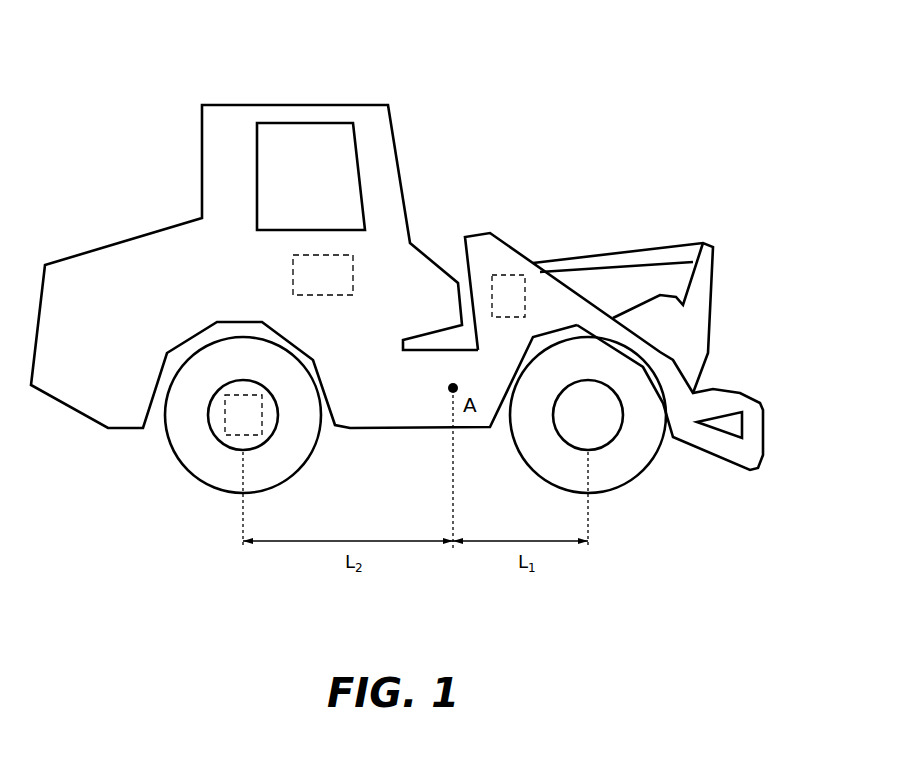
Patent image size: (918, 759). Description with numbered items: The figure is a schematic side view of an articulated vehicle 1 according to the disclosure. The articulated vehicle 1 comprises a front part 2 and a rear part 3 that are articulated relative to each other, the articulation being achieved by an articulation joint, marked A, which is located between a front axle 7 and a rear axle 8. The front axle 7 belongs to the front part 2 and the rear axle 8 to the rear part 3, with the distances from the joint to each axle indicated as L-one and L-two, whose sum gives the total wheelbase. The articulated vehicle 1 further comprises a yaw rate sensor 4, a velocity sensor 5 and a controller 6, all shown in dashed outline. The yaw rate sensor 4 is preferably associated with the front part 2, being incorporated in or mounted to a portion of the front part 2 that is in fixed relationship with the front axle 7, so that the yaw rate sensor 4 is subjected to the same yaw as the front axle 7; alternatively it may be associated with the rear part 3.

The articulated vehicle 1 is at (487, 86).
The front part 2 is at (676, 218).
The rear part 3 is at (107, 201).
The yaw rate sensor 4 is at (508, 296).
The velocity sensor 5 is at (243, 415).
The controller 6 is at (323, 275).
The front axle 7 is at (593, 417).
The rear axle 8 is at (229, 434).